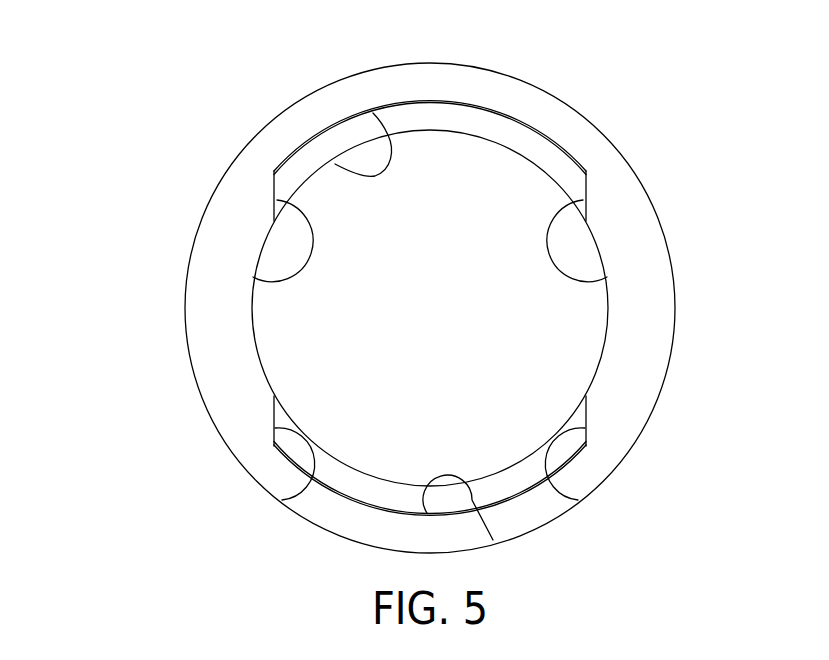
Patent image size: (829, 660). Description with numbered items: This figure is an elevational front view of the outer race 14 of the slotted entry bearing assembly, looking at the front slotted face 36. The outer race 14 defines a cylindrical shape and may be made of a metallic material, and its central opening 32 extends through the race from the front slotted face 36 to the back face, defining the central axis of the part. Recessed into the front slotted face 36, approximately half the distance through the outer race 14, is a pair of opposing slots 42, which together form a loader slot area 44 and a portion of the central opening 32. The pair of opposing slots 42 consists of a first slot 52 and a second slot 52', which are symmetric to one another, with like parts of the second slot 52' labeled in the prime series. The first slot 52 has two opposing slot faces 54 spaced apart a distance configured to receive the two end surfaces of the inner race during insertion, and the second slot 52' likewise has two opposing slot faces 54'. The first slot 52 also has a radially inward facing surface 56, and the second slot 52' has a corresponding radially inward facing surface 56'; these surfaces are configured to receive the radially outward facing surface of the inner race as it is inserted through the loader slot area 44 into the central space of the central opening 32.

The outer race 14 is at (132, 74).
The central opening 32 is at (560, 340).
The front slotted face 36 is at (635, 375).
The pair of opposing slots 42 is at (424, 310).
The loader slot area 44 is at (410, 170).
The first slot 52 is at (412, 114).
The second slot 52' is at (405, 504).
The opposing slot faces 54 is at (431, 251).
The opposing slot faces 54' is at (427, 478).
The radially inward facing surface 56 is at (286, 144).
The radially inward facing surface 56' is at (500, 532).